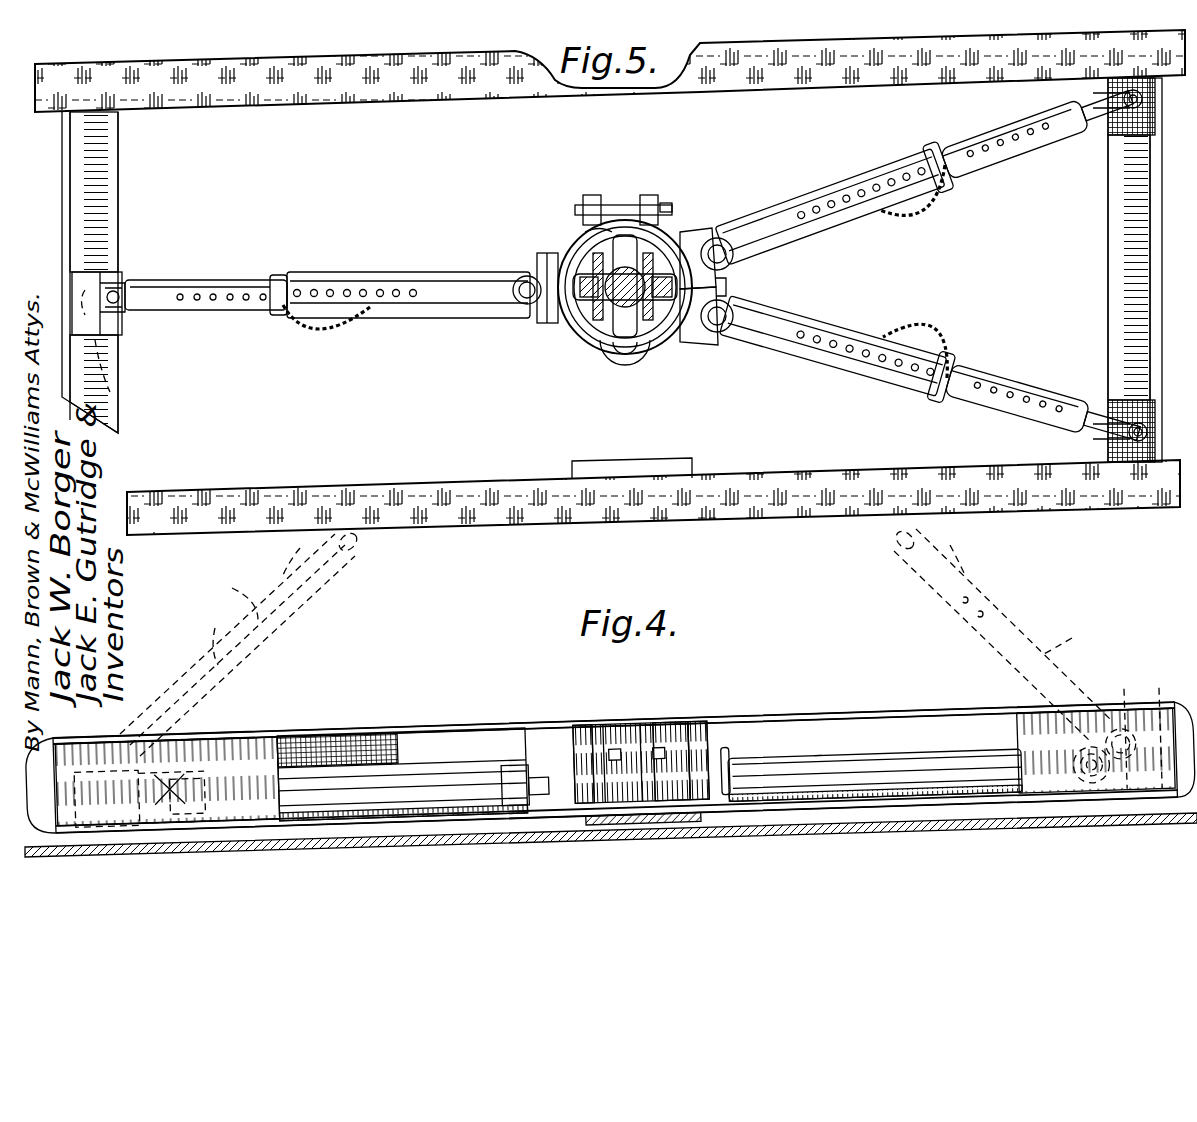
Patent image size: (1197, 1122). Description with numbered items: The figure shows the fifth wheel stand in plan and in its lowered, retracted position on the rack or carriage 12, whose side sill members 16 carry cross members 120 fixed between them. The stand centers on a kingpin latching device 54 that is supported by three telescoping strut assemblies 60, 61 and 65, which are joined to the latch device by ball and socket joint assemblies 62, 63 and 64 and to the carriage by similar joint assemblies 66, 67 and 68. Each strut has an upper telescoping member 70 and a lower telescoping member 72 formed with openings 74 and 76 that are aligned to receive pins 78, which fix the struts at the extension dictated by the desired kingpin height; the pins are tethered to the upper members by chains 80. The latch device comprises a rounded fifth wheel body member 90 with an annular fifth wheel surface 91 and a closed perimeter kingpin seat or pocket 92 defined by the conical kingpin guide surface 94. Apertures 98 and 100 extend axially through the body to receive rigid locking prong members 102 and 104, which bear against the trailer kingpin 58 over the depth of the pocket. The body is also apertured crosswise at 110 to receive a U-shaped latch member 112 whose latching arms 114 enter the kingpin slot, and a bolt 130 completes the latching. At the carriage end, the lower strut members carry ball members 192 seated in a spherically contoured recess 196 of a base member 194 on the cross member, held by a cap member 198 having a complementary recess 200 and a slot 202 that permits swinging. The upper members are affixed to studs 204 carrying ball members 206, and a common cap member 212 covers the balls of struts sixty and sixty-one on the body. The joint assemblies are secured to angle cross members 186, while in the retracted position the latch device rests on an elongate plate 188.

In FIG. 5, the rack or carriage 12 is at (537, 522).
In FIG. 4, the rack or carriage 12 is at (348, 725).
In FIG. 5, the sill members 16 is at (492, 88).
In FIG. 4, the sill members 16 is at (252, 757).
In FIG. 5, the kingpin latching device 54 is at (577, 342).
In FIG. 4, the kingpin latching device 54 is at (705, 720).
In FIG. 5, the trailer kingpin 58 is at (622, 265).
In FIG. 5, the telescoping strut assembly 60 is at (790, 217).
In FIG. 5, the telescoping strut assembly 61 is at (845, 318).
In FIG. 4, the telescoping strut assembly 61 is at (850, 752).
In FIG. 5, the ball and socket joint assembly 62 is at (700, 232).
In FIG. 5, the ball and socket joint assembly 63 is at (720, 352).
In FIG. 5, the ball and socket joint assembly 64 is at (535, 303).
In FIG. 5, the telescoping strut assembly 65 is at (447, 273).
In FIG. 4, the telescoping strut assembly 65 is at (422, 765).
In FIG. 5, the ball and socket joint assembly 66 is at (1105, 90).
In FIG. 5, the ball and socket joint assembly 67 is at (1128, 405).
In FIG. 5, the ball and socket joint assembly 68 is at (118, 283).
In FIG. 5, the upper telescoping member 70 is at (300, 318).
In FIG. 4, the upper telescoping member 70 is at (912, 770).
In FIG. 5, the lower telescoping member 72 is at (240, 312).
In FIG. 4, the lower telescoping member 72 is at (649, 634).
In FIG. 5, the openings 74 is at (336, 290).
In FIG. 4, the openings 74 is at (388, 765).
In FIG. 5, the openings 76 is at (256, 290).
In FIG. 4, the openings 76 is at (1022, 600).
In FIG. 5, the pins 78 is at (282, 290).
In FIG. 5, the chains 80 is at (322, 345).
In FIG. 5, the fifth wheel body member 90 is at (590, 252).
In FIG. 4, the fifth wheel body member 90 is at (660, 745).
In FIG. 5, the annular fifth wheel surface 91 is at (565, 323).
In FIG. 4, the annular fifth wheel surface 91 is at (690, 745).
In FIG. 5, the kingpin seat or pocket 92 is at (660, 322).
In FIG. 5, the conical kingpin guide surface 94 is at (667, 245).
In FIG. 5, the apertures 98 is at (578, 277).
In FIG. 5, the aperture 100 is at (650, 222).
In FIG. 5, the locking prong member 102 is at (600, 332).
In FIG. 5, the locking prong member 104 is at (600, 205).
In FIG. 4, the apertures 110 is at (652, 748).
In FIG. 5, the U-shaped latch member 112 is at (628, 372).
In FIG. 5, the latching arms 114 is at (613, 198).
In FIG. 4, the cross members 120 is at (1175, 712).
In FIG. 5, the bolt 130 is at (580, 232).
In FIG. 5, the angles 186 is at (95, 178).
In FIG. 4, the angles 186 is at (188, 792).
In FIG. 5, the elongate plate 188 is at (690, 468).
In FIG. 4, the elongate plate 188 is at (722, 810).
In FIG. 4, the ball member 192 is at (1125, 735).
In FIG. 5, the base member 194 is at (72, 280).
In FIG. 4, the base member 194 is at (135, 735).
In FIG. 5, the spherically contoured recess 196 is at (95, 388).
In FIG. 4, the spherically contoured recess 196 is at (1162, 740).
In FIG. 5, the cap member 198 is at (125, 320).
In FIG. 5, the spherically contoured recess 200 is at (105, 280).
In FIG. 4, the spherically contoured recess 200 is at (1105, 770).
In FIG. 5, the slot 202 is at (125, 298).
In FIG. 5, the studs 204 is at (730, 242).
In FIG. 4, the studs 204 is at (546, 775).
In FIG. 4, the ball members 206 is at (595, 740).
In FIG. 5, the common cap member 212 is at (742, 288).